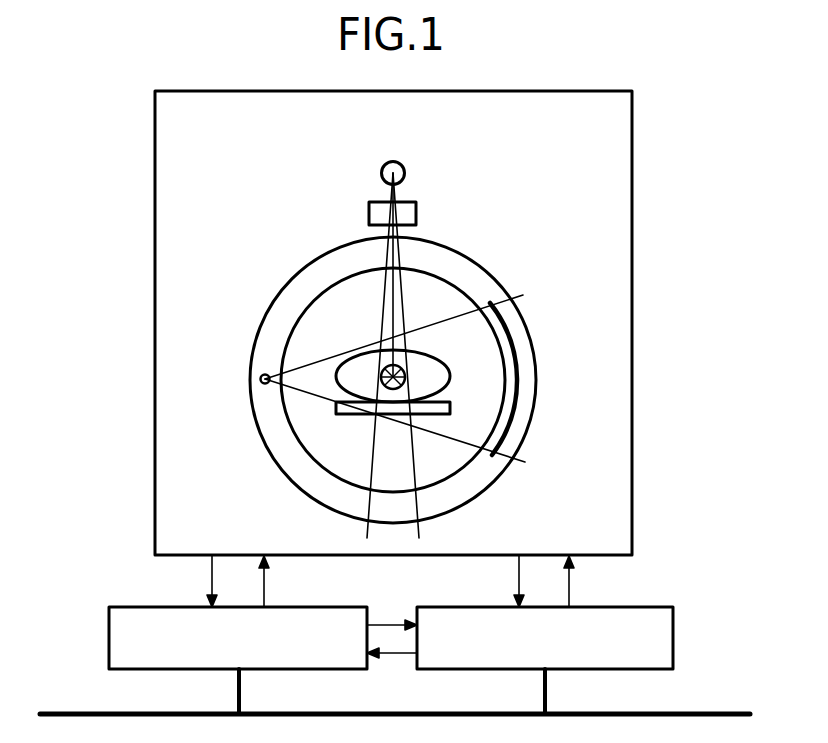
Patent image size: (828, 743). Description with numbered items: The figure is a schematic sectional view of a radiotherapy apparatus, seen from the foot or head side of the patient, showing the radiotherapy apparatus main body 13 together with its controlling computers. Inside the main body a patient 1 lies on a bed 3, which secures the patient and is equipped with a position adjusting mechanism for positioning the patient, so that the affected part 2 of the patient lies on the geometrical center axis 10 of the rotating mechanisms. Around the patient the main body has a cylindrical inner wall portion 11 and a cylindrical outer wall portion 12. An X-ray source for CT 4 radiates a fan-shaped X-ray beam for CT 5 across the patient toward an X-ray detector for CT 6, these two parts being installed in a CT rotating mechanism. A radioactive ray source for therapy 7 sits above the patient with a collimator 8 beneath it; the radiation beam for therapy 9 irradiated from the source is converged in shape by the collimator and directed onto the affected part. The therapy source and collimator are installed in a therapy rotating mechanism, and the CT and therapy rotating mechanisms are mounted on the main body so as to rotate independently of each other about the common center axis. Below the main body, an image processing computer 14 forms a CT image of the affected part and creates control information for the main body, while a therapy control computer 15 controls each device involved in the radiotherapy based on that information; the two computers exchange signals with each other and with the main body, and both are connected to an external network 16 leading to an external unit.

The patient 1 is at (450, 359).
The affected part 2 is at (393, 363).
The bed 3 is at (346, 415).
The X-ray source for CT 4 is at (262, 375).
The X-ray beam for CT 5 is at (457, 317).
The X-ray detector for CT 6 is at (520, 347).
The radioactive ray source for therapy 7 is at (406, 172).
The collimator 8 is at (417, 212).
The radiation beam for therapy 9 is at (399, 257).
The geometrical center axis 10 is at (405, 376).
The cylindrical inner wall portion 11 is at (335, 280).
The cylindrical outer wall portion 12 is at (282, 292).
The radiotherapy apparatus main body 13 is at (688, 150).
The image processing computer 14 is at (109, 637).
The therapy control computer 15 is at (675, 637).
The external network 16 is at (726, 713).